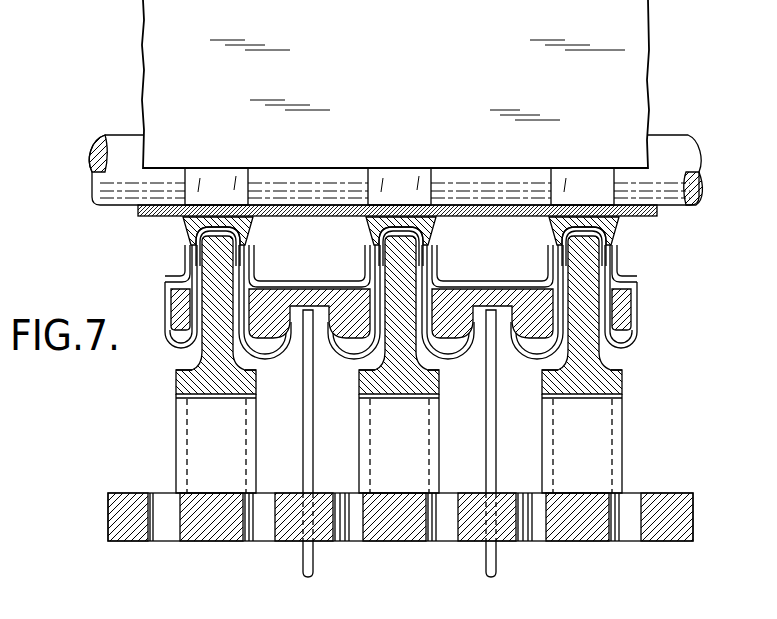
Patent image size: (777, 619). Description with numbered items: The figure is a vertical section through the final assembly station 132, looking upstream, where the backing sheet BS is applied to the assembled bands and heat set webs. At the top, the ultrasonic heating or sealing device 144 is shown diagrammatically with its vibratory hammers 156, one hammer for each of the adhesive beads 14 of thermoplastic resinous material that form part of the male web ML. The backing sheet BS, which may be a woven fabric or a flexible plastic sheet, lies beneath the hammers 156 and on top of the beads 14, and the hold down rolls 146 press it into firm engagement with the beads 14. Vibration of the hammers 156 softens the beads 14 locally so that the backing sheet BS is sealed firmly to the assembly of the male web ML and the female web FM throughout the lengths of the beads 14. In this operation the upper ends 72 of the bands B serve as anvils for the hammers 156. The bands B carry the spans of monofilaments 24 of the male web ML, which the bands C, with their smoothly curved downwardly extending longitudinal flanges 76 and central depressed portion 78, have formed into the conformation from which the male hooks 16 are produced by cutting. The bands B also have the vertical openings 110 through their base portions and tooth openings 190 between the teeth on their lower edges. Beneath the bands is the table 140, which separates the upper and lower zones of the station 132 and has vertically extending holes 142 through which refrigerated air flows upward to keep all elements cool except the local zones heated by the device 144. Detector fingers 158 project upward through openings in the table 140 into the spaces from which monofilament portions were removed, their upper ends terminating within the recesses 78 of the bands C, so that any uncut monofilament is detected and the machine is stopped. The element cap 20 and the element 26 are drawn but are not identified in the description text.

The ultrasonic heating or sealing device 144 is at (160, 37).
The hold down rolls 146 is at (108, 172).
The vibratory hammers 156 is at (213, 168).
The upper ends of the bands B 72 is at (582, 228).
The backing sheet BS is at (638, 218).
The beads of thermoplastic resinous material 14 is at (192, 220).
The contact cap 20 is at (204, 257).
The final assembly station 132 is at (672, 292).
The bands B is at (176, 383).
The bands C is at (266, 333).
The male hooks 16 is at (527, 342).
The male web ML is at (181, 305).
The monofilaments 24 is at (629, 348).
The female web FM is at (462, 279).
The insulating block 26 is at (300, 282).
The longitudinal flanges 76 is at (540, 340).
The central depressed portion 78 is at (316, 312).
The detector finger 158 is at (309, 438).
The tooth openings 190 is at (198, 397).
The openings 110 is at (185, 443).
The table 140 is at (694, 518).
The holes 142 is at (160, 511).